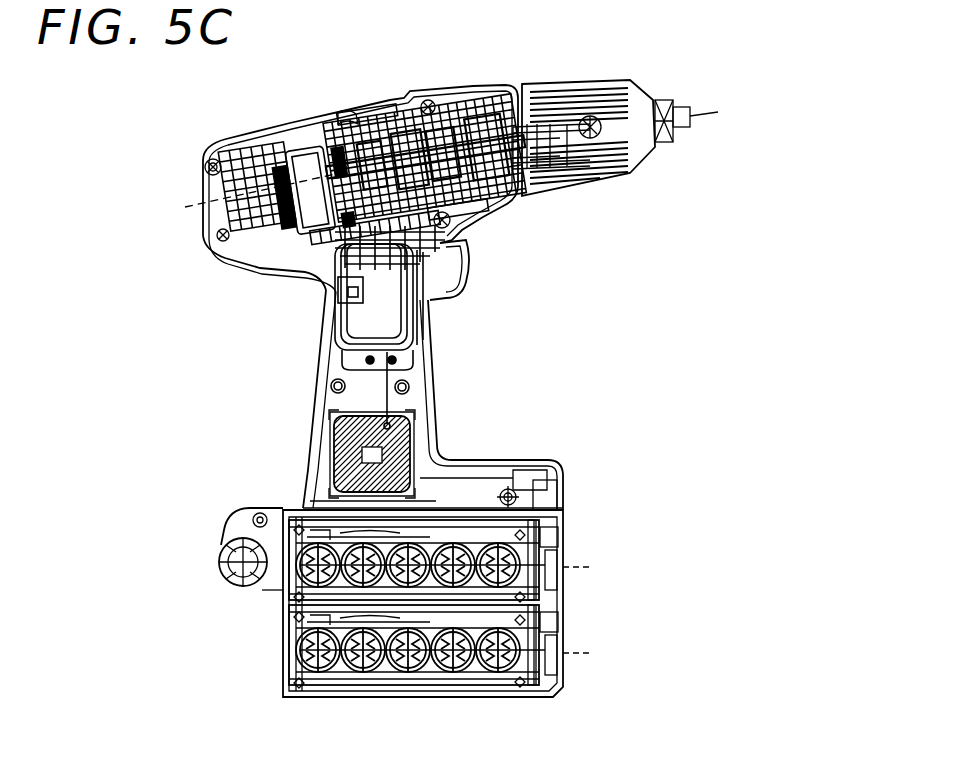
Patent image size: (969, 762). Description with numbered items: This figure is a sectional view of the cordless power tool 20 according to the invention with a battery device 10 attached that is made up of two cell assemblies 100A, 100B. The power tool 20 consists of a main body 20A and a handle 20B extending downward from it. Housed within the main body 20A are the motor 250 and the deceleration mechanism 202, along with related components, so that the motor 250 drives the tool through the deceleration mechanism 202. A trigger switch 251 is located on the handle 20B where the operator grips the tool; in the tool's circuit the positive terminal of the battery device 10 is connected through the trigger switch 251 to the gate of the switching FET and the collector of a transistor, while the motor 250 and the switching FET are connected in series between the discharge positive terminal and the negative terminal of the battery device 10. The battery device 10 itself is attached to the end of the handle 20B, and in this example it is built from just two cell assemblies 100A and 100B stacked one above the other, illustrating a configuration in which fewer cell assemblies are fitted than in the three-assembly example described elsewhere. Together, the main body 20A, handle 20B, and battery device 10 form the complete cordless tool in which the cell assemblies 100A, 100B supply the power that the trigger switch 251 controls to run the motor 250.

The power tool body 20 is at (542, 380).
The main body 20A is at (388, 98).
The handle 20B is at (298, 382).
The deceleration mechanism 202 is at (350, 110).
The motor 250 is at (298, 158).
The trigger switch 251 is at (453, 278).
The battery device 10 is at (622, 590).
The cell assembly 100A is at (567, 552).
The cell assembly 100B is at (567, 635).